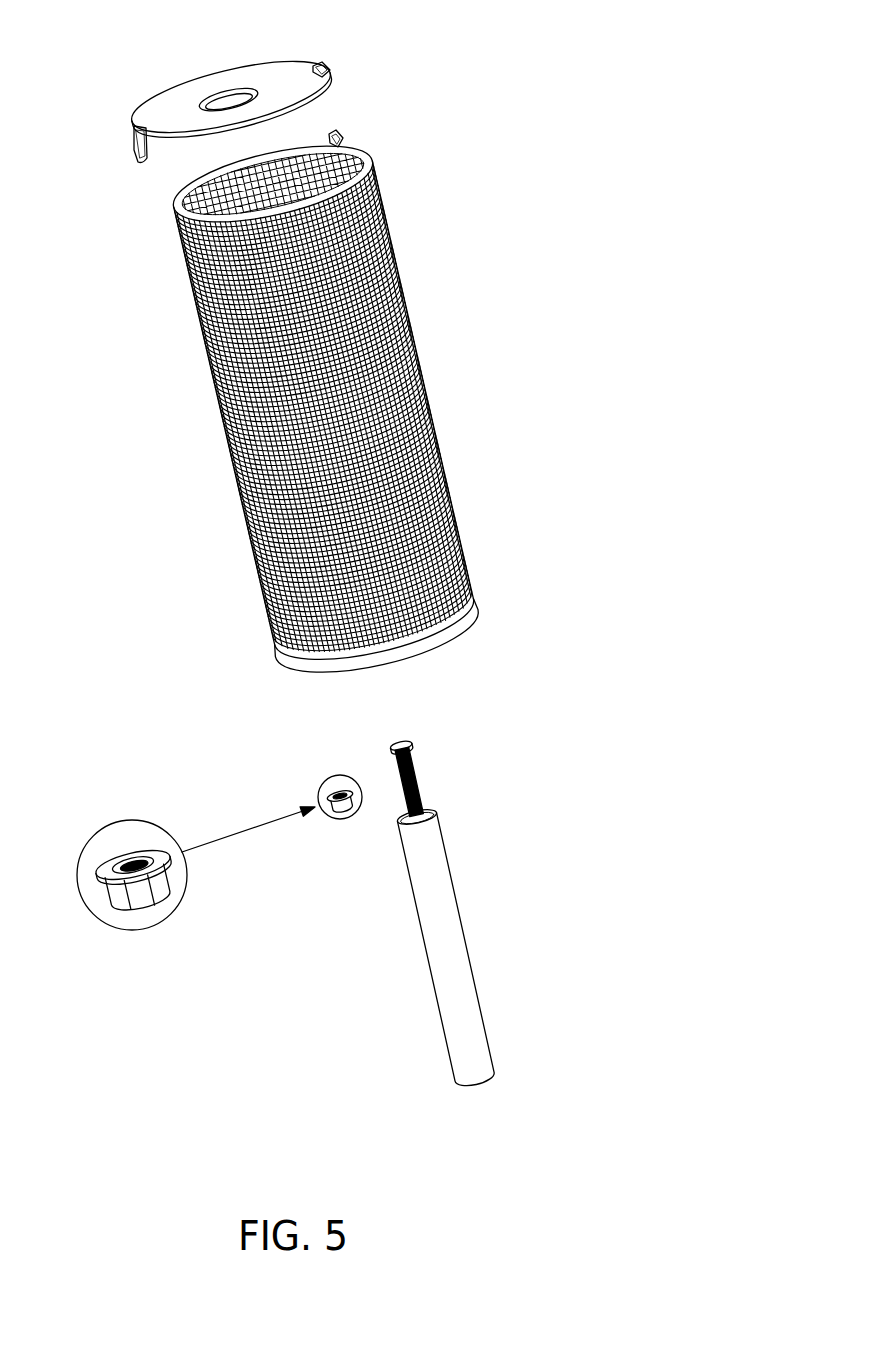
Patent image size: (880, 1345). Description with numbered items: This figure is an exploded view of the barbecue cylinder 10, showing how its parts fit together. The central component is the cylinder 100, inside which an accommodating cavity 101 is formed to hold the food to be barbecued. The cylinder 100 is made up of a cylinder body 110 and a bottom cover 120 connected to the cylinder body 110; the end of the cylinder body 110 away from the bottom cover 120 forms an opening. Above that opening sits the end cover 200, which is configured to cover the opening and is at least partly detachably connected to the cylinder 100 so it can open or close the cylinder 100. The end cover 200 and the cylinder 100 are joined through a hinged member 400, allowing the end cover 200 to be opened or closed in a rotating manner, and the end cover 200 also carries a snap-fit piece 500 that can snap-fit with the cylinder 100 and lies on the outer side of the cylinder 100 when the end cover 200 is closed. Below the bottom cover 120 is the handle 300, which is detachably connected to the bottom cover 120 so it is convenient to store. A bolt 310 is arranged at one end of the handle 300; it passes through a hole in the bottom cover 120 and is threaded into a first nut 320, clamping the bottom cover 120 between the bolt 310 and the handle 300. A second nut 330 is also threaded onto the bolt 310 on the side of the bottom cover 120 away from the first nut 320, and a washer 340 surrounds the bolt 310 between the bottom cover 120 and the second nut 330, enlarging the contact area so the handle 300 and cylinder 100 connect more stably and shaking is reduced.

The barbecue cylinder 10 is at (461, 29).
The cylinder 100 is at (327, 409).
The accommodating cavity 101 is at (237, 200).
The cylinder body 110 is at (425, 410).
The bottom cover 120 is at (467, 608).
The end cover 200 is at (288, 80).
The handle 300 is at (460, 935).
The bolt 310 is at (412, 782).
The first nut 320 is at (407, 747).
The second nut 330 is at (128, 898).
The washer 340 is at (107, 868).
The hinged member 400 is at (340, 143).
The snap-fit piece 500 is at (136, 134).